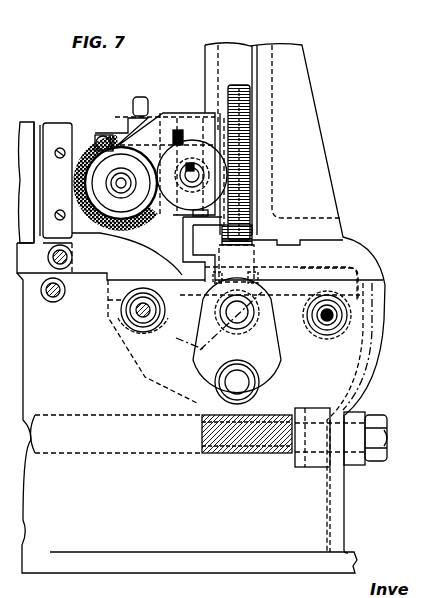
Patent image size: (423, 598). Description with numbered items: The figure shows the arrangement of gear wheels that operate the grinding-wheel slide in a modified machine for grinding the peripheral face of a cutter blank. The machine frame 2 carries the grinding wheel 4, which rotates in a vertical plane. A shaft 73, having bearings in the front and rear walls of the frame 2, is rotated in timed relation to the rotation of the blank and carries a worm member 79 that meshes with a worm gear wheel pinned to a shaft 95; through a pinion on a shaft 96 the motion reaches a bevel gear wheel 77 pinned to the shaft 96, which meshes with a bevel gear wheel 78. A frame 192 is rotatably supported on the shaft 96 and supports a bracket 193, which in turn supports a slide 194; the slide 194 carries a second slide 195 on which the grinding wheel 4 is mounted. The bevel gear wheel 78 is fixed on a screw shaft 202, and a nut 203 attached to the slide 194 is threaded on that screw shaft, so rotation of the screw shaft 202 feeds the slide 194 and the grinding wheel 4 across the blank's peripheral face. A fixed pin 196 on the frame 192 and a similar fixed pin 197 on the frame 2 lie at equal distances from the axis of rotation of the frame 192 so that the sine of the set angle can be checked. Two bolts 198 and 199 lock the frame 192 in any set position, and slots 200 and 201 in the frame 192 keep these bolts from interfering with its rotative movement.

The frame 2 is at (345, 503).
The grinding wheel 4 is at (80, 150).
The shaft 73 is at (185, 455).
The bevel gear wheel 77 is at (255, 322).
The bevel gear wheel 78 is at (262, 292).
The worm member 79 is at (250, 455).
The shaft 95 is at (245, 382).
The shaft 96 is at (237, 312).
The frame 192 is at (147, 253).
The bracket 193 is at (313, 103).
The slide 194 is at (213, 50).
The second slide 195 is at (175, 108).
The fixed pin 196 is at (72, 257).
The fixed pin 197 is at (58, 297).
The bolt 198 is at (148, 313).
The bolt 199 is at (327, 320).
The slot 200 is at (155, 341).
The slot 201 is at (336, 318).
The screw shaft 202 is at (235, 88).
The nut 203 is at (253, 153).